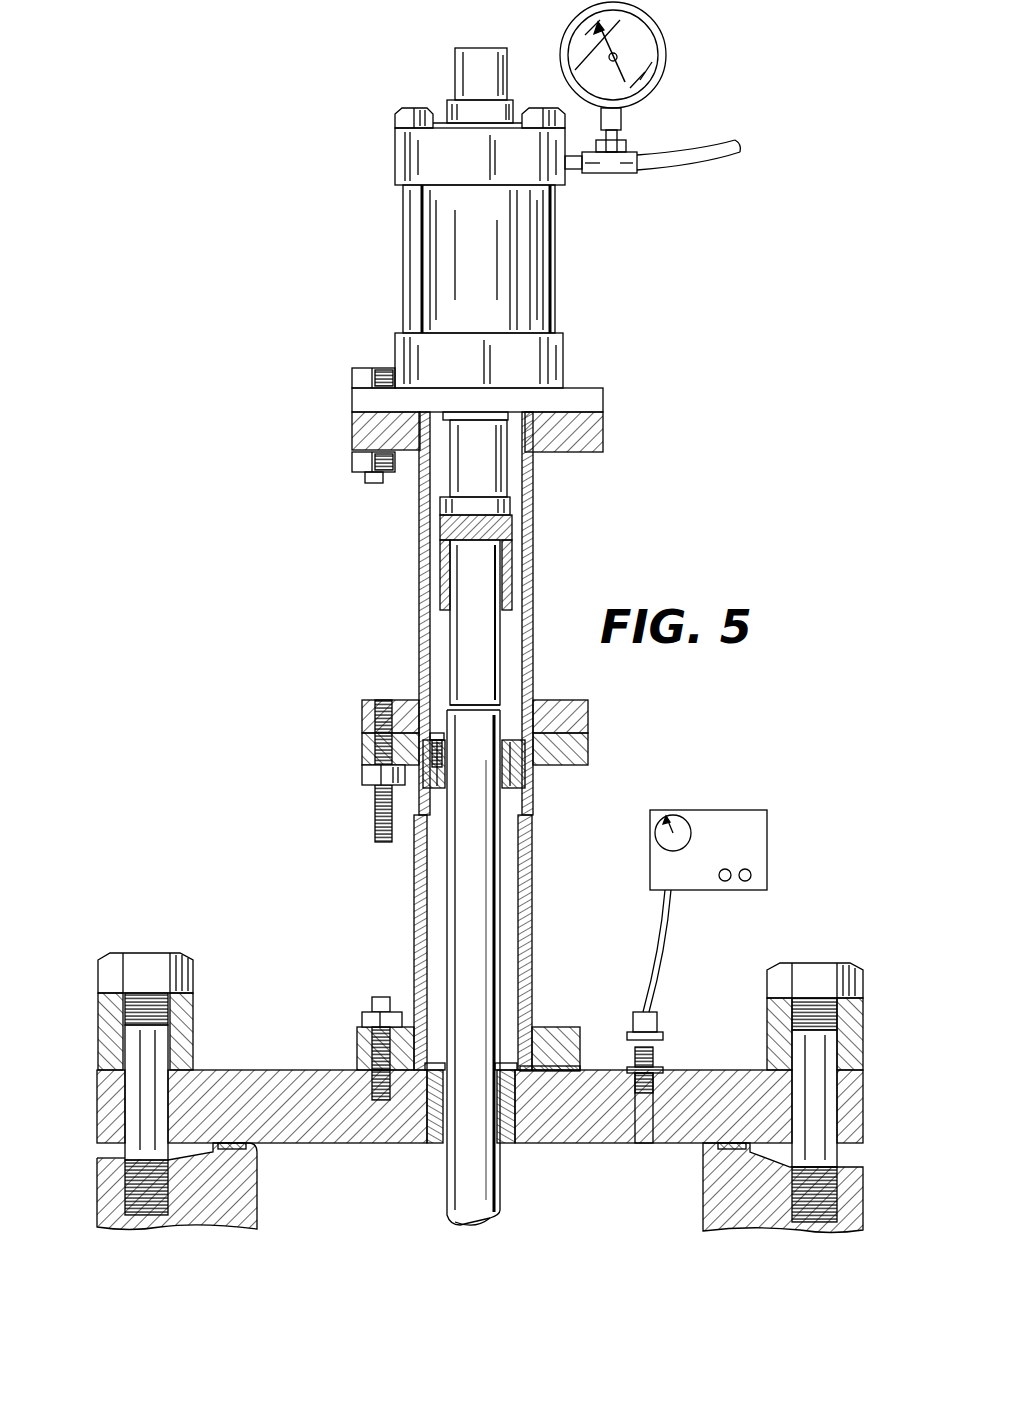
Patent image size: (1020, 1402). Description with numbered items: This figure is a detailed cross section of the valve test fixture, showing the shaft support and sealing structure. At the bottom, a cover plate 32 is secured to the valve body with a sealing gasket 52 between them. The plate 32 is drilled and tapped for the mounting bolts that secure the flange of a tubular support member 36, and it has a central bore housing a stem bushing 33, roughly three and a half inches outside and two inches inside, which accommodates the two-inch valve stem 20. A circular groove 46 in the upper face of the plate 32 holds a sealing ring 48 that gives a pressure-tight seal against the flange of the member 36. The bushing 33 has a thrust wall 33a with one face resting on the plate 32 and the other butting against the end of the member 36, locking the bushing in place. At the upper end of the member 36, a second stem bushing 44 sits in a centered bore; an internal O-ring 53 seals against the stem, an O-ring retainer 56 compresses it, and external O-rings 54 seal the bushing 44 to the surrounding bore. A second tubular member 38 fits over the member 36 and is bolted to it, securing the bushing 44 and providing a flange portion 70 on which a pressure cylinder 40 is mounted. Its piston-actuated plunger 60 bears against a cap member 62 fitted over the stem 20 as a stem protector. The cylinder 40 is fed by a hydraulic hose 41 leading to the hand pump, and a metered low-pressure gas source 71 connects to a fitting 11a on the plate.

The pressure cylinder 40 is at (440, 247).
The hydraulic hose 41 is at (680, 165).
The flange portion 70 is at (603, 437).
The piston-actuated plunger 60 is at (490, 470).
The cap member 62 is at (512, 573).
The second tubular member 38 is at (419, 617).
The tubular support member 36 is at (414, 866).
The O-ring retainer 56 is at (512, 740).
The second stem bushing 44 is at (375, 748).
The internal O-ring 53 is at (445, 758).
The external O-rings 54 is at (525, 770).
The valve stem 20 is at (490, 903).
The metered source of low pressure gas 71 is at (767, 845).
The cover plate 32 is at (318, 1068).
The stem bushing 33 is at (430, 1143).
The thrust wall 33a is at (500, 1064).
The sealing ring 48 is at (545, 1027).
The circular groove 46 is at (580, 1070).
The fitting 11a is at (655, 1058).
The sealing gasket 52 is at (257, 1162).